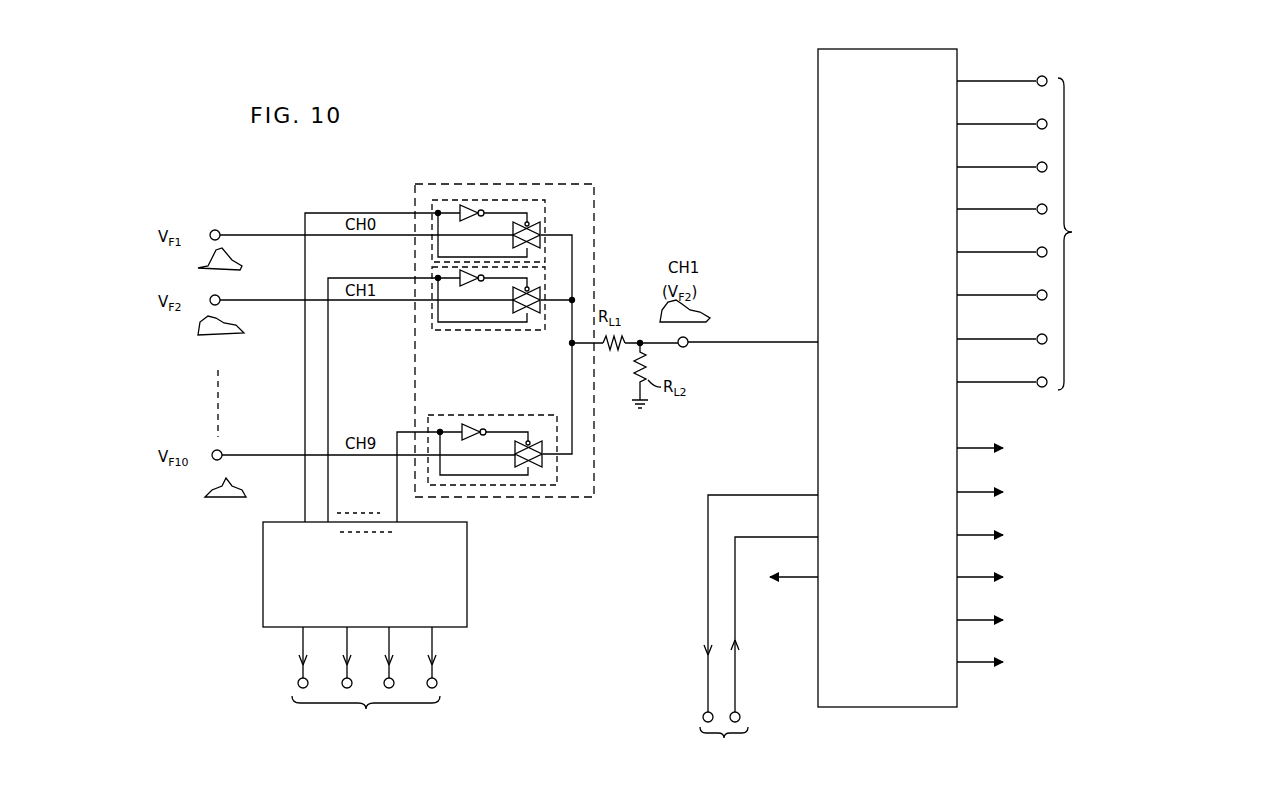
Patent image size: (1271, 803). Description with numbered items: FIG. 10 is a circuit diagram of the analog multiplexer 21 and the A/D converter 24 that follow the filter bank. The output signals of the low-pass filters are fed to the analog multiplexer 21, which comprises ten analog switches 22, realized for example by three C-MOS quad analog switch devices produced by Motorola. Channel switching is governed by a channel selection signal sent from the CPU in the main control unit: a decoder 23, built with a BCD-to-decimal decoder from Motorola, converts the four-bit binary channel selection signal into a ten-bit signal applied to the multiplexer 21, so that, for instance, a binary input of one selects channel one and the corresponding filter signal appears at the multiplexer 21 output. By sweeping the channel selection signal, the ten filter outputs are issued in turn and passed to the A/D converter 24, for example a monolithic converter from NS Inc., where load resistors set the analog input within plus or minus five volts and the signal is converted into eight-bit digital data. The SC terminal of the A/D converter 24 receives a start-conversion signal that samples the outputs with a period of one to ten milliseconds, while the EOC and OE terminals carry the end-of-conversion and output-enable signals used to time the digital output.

The analog multiplexer 21 is at (594, 192).
The analog switch 22 is at (545, 207).
The decoder 23 is at (457, 590).
The A/D converter 24 is at (900, 57).